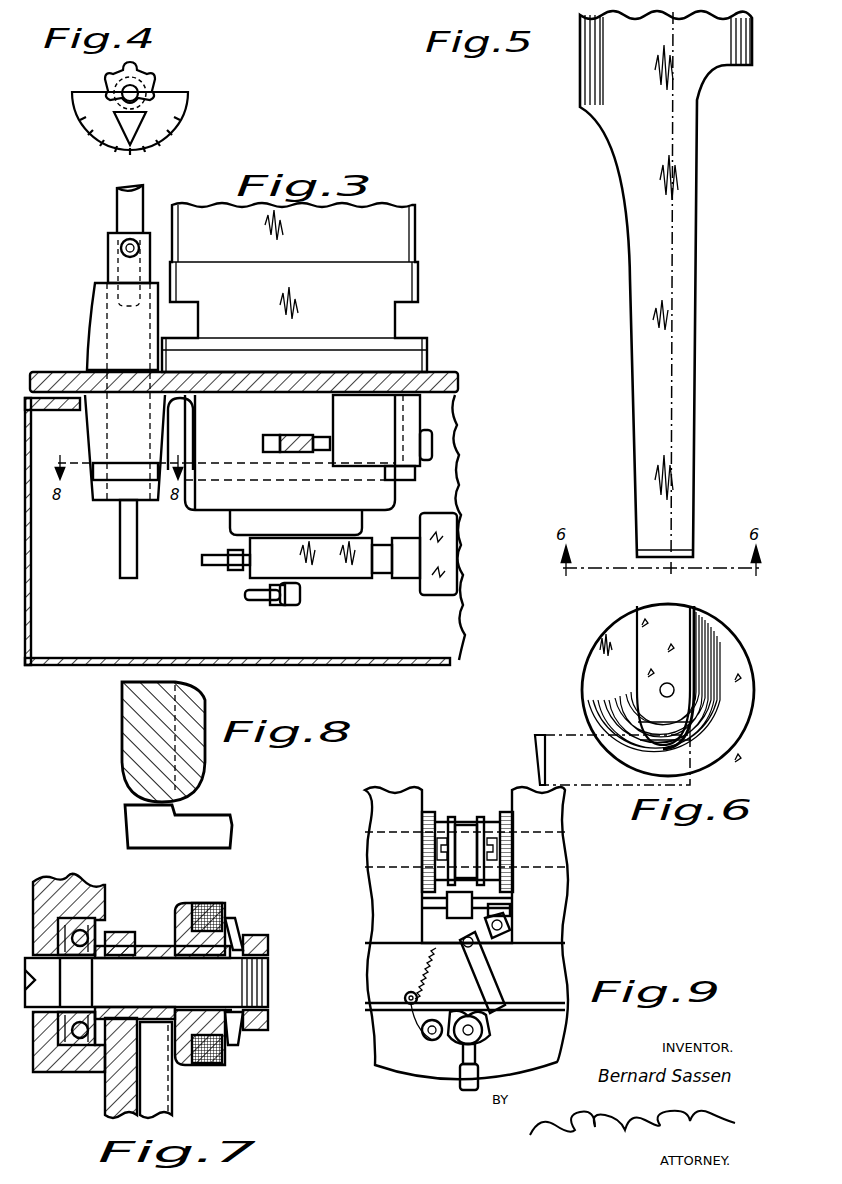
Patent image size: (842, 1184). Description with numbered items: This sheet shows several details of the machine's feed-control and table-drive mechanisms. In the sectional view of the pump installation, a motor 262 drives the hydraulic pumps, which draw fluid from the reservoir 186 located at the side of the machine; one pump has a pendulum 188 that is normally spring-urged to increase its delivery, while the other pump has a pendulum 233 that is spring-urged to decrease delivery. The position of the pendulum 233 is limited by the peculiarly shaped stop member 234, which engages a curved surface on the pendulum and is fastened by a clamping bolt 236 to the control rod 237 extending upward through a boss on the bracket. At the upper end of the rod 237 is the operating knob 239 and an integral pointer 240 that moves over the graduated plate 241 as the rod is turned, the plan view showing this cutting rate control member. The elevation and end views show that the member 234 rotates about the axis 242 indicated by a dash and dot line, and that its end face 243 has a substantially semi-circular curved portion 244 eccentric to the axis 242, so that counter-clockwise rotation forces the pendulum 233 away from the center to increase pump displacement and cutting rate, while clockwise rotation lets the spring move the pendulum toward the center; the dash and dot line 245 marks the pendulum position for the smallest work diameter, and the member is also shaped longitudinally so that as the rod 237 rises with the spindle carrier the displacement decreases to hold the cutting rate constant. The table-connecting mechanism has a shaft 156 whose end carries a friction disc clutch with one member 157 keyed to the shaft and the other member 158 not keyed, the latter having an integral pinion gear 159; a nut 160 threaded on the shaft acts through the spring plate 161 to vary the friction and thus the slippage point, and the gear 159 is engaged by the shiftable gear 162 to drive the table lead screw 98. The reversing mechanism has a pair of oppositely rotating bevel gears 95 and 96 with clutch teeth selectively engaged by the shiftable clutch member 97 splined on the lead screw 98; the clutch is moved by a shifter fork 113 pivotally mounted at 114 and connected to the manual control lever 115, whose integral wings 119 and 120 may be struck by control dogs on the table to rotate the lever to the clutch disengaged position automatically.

In FIG. 4, the control rod 237 is at (133, 92).
In FIG. 3, the control rod 237 is at (125, 208).
In FIG. 4, the operating knob 239 is at (150, 82).
In FIG. 4, the graduated plate 241 is at (190, 108).
In FIG. 4, the pointer 240 is at (140, 130).
In FIG. 3, the clamping bolt 236 is at (121, 248).
In FIG. 3, the stop member 234 is at (108, 262).
In FIG. 5, the stop member 234 is at (697, 372).
In FIG. 8, the stop member 234 is at (122, 748).
In FIG. 3, the motor 262 is at (400, 238).
In FIG. 3, the pendulum 188 is at (265, 442).
In FIG. 3, the pendulum 233 is at (200, 468).
In FIG. 6, the pendulum 233 is at (560, 740).
In FIG. 8, the pendulum 233 is at (200, 820).
In FIG. 3, the reservoir 186 is at (440, 632).
In FIG. 5, the axis 242 is at (672, 405).
In FIG. 6, the axis 242 is at (672, 688).
In FIG. 5, the end face 243 is at (640, 560).
In FIG. 6, the curved portion 244 is at (640, 695).
In FIG. 6, the dash and dot line 245 is at (572, 735).
In FIG. 7, the shaft 156 is at (135, 972).
In FIG. 7, the pinion gear 159 is at (118, 935).
In FIG. 7, the friction disc clutch member 158 is at (180, 905).
In FIG. 7, the friction disc clutch member 157 is at (232, 940).
In FIG. 7, the nut 160 is at (262, 952).
In FIG. 7, the spring plate 161 is at (232, 1040).
In FIG. 7, the shiftable gear 162 is at (108, 1093).
In FIG. 9, the table lead screw 98 is at (392, 825).
In FIG. 9, the bevel gear 95 is at (430, 815).
In FIG. 9, the bevel gear 96 is at (505, 815).
In FIG. 9, the shiftable clutch member 97 is at (470, 822).
In FIG. 9, the shifter fork 113 is at (510, 910).
In FIG. 9, the pivot 114 is at (500, 932).
In FIG. 9, the wing 119 is at (425, 1027).
In FIG. 9, the wing 120 is at (492, 1032).
In FIG. 9, the manual control lever 115 is at (478, 1072).